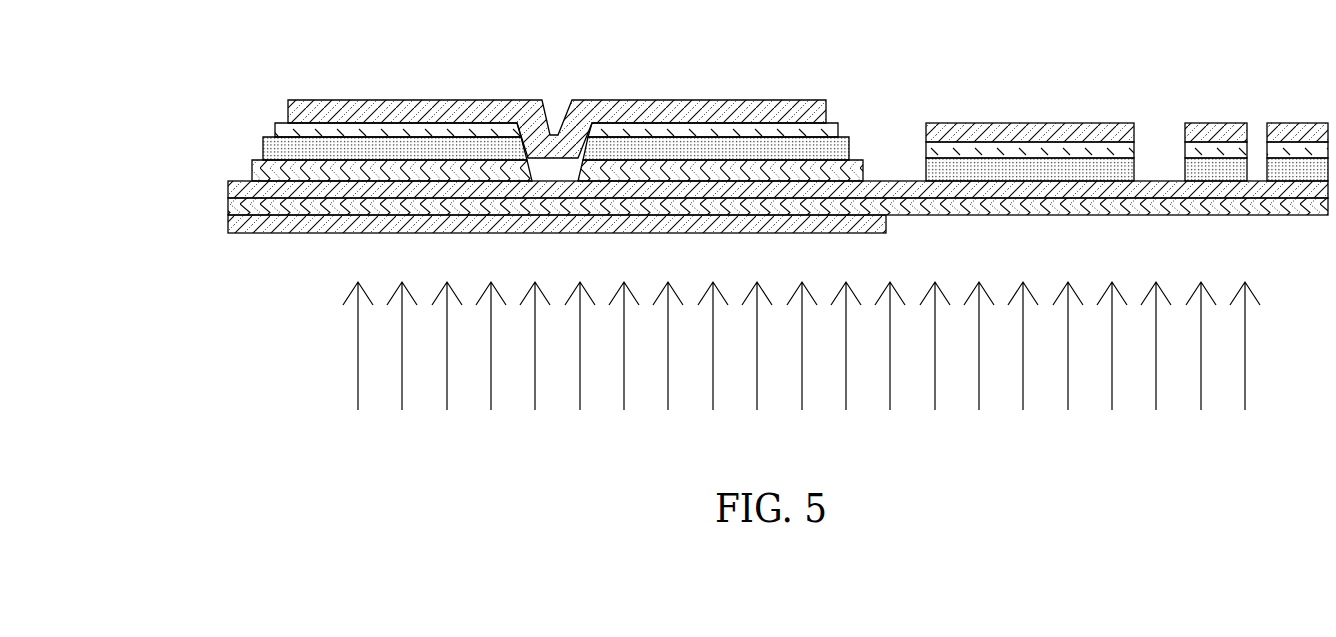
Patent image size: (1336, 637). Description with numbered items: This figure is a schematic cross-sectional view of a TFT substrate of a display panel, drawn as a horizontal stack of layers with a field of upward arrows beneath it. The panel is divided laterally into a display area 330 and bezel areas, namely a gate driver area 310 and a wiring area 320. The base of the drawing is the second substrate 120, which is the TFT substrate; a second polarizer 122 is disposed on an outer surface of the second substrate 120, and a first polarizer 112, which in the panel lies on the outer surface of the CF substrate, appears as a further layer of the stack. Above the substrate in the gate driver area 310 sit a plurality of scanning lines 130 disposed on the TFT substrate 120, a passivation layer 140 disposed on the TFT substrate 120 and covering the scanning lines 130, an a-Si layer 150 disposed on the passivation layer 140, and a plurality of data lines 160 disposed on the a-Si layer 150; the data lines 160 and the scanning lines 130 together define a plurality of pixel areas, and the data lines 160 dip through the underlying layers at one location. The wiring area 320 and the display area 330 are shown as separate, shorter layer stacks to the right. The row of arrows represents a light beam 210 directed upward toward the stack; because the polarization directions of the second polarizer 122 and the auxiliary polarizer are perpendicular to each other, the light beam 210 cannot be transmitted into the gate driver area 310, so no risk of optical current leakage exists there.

The first polarizer 112 is at (282, 222).
The second substrate 120 is at (385, 195).
The second polarizer 122 is at (253, 205).
The scanning lines 130 is at (272, 177).
The passivation layer 140 is at (278, 148).
The a-Si layer 150 is at (288, 128).
The data lines 160 is at (304, 108).
The light beam 210 is at (481, 394).
The gate driver area 310 is at (534, 97).
The wiring area 320 is at (995, 103).
The display area 330 is at (1218, 100).